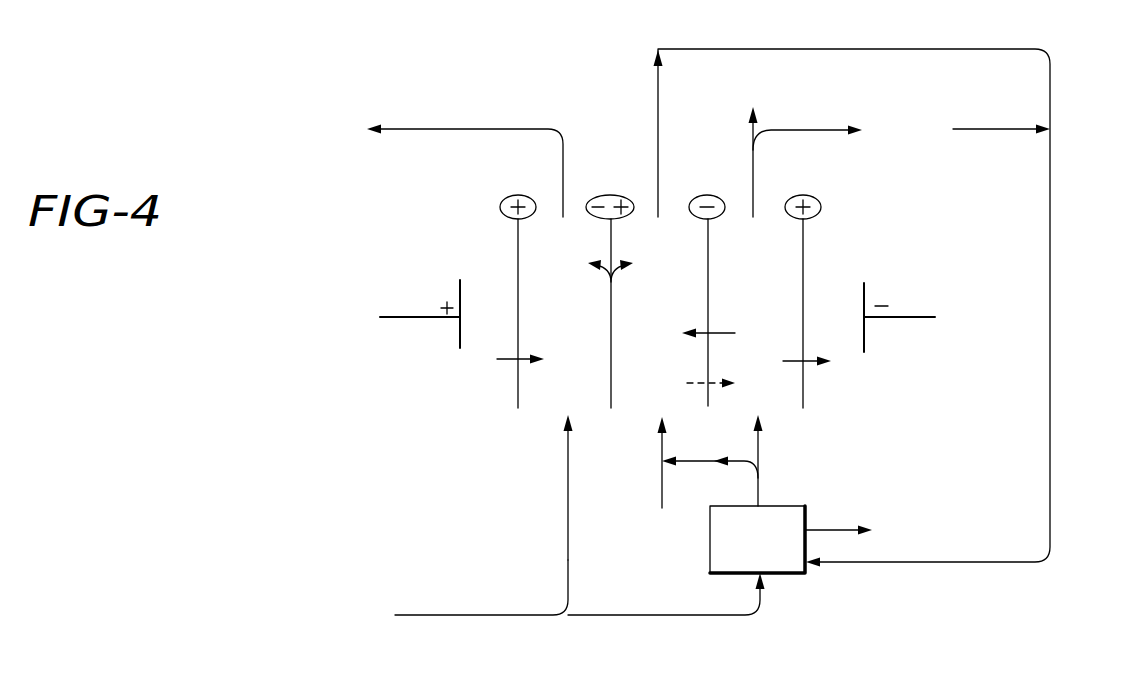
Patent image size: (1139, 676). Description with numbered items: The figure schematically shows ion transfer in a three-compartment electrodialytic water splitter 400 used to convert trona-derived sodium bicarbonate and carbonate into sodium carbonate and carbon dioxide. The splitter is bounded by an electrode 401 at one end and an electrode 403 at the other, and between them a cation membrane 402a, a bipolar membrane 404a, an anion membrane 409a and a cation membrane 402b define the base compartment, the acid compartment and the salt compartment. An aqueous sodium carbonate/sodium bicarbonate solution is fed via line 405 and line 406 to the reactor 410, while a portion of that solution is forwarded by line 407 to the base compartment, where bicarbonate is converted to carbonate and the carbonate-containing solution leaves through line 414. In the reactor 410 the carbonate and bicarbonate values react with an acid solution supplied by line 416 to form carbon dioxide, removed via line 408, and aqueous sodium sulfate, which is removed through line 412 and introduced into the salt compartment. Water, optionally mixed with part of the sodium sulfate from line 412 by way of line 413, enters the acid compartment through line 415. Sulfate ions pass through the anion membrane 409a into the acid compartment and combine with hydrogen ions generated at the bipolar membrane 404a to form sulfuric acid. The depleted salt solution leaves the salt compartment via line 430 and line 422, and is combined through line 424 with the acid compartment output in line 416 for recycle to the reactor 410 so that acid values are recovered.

The three-compartment electrodialytic water splitter 400 is at (478, 247).
The electrode 401 is at (428, 320).
The cation membrane 402a is at (519, 383).
The cation membrane 402b is at (803, 383).
The electrode 403 is at (878, 322).
The bipolar membrane 404a is at (611, 383).
The line 405 is at (477, 615).
The line 406 is at (667, 615).
The line 407 is at (568, 497).
The line 408 is at (878, 489).
The anion membrane 409a is at (708, 395).
The reactor 410 is at (788, 573).
The line 412 is at (758, 445).
The line 413 is at (722, 438).
The line 414 is at (455, 134).
The line 415 is at (662, 443).
The line 416 is at (757, 50).
The line 422 is at (840, 133).
The line 424 is at (1006, 99).
The line 430 is at (753, 157).